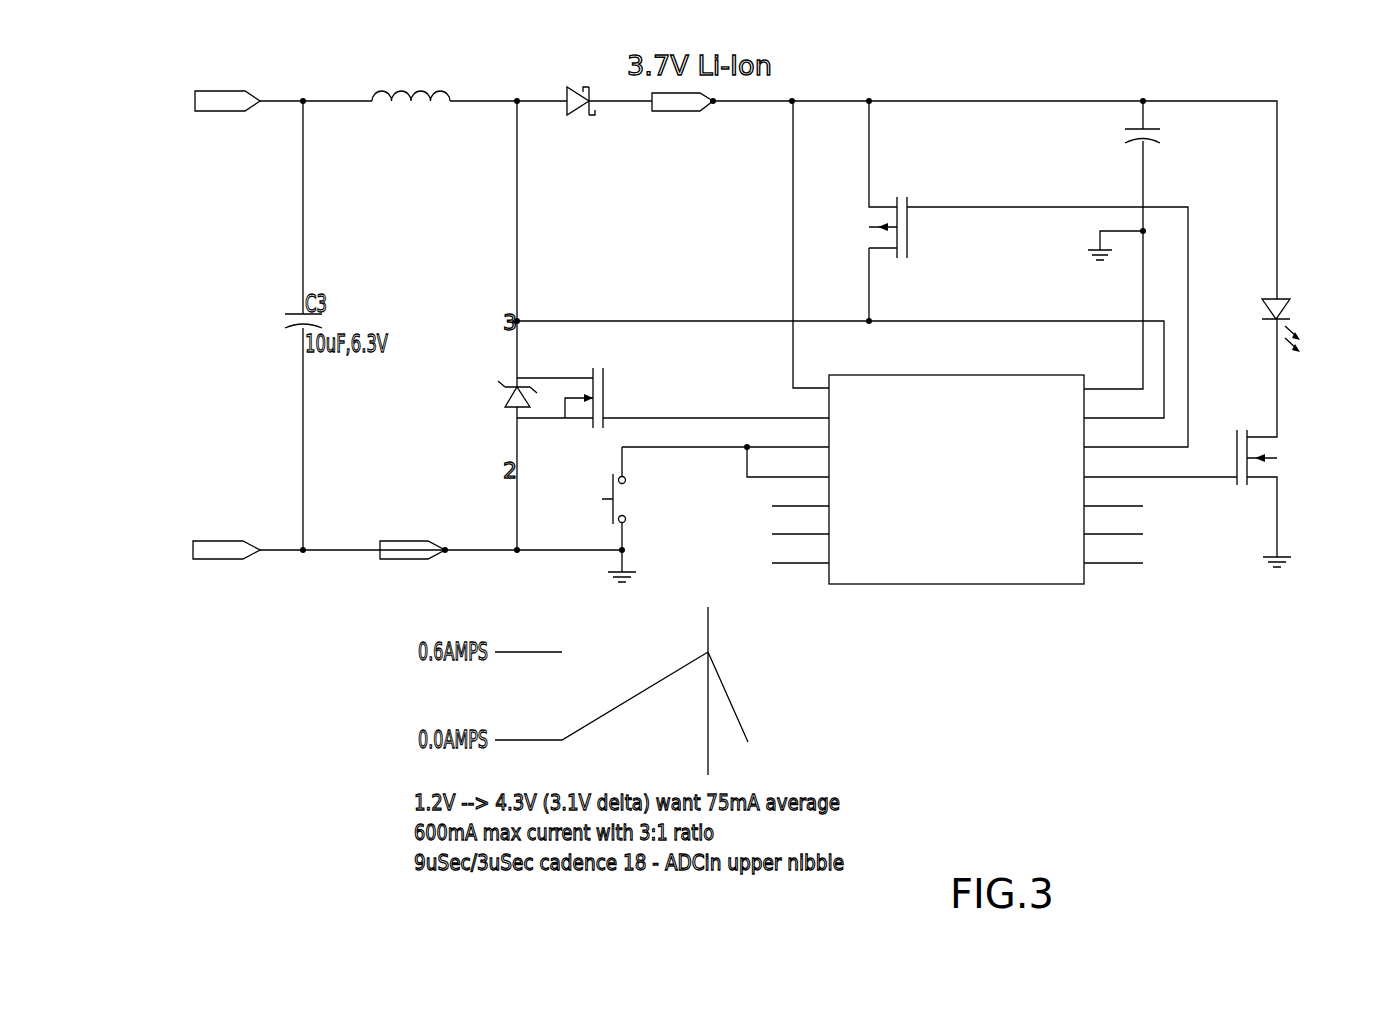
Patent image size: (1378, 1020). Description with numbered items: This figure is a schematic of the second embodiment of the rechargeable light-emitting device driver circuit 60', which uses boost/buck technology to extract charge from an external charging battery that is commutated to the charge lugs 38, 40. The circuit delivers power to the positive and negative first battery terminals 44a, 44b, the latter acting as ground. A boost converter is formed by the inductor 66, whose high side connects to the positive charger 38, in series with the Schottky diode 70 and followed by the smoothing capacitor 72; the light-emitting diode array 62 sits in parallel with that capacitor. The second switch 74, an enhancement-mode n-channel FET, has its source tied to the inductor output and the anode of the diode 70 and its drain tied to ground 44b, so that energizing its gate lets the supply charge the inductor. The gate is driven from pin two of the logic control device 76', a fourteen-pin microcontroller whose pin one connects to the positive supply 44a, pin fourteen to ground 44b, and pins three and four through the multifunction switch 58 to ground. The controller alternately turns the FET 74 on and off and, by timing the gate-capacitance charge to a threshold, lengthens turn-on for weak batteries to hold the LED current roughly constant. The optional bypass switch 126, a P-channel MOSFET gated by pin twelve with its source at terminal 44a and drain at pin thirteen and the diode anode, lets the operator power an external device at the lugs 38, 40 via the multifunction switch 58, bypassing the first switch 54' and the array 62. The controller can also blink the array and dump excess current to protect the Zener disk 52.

The positive charger lug 38 is at (228, 90).
The charge lug 40 is at (220, 540).
The positive first battery terminal 44a is at (716, 104).
The first battery terminal (ground) 44b is at (400, 540).
The Zener disk 52 is at (505, 395).
The first switch 54' is at (1291, 455).
The multifunction switch 58 is at (624, 522).
The rechargeable light-emitting device driver circuit 60' is at (1223, 713).
The light-emitting diode array 62 is at (1272, 298).
The inductor 66 is at (378, 90).
The Schottky diode 70 is at (597, 117).
The smoothing capacitor 72 is at (1145, 177).
The second switch (FET) 74 is at (603, 377).
The logic control device 76' is at (964, 489).
The bypass switch 126 is at (911, 240).